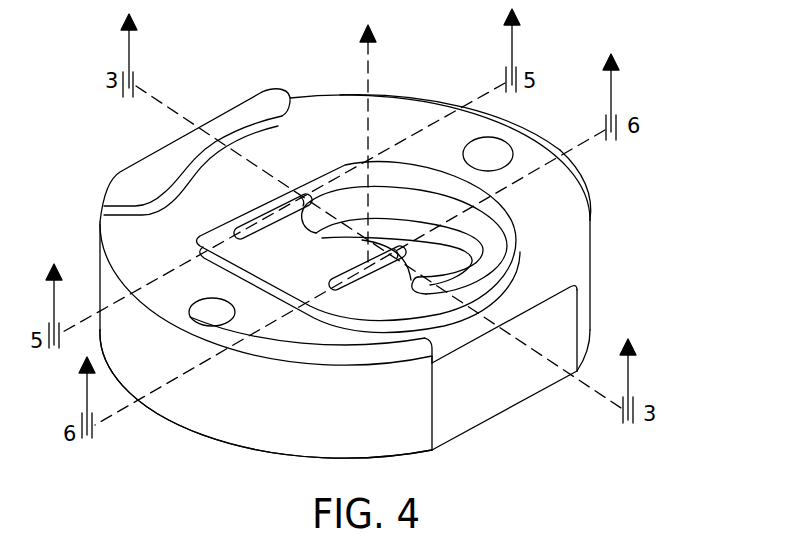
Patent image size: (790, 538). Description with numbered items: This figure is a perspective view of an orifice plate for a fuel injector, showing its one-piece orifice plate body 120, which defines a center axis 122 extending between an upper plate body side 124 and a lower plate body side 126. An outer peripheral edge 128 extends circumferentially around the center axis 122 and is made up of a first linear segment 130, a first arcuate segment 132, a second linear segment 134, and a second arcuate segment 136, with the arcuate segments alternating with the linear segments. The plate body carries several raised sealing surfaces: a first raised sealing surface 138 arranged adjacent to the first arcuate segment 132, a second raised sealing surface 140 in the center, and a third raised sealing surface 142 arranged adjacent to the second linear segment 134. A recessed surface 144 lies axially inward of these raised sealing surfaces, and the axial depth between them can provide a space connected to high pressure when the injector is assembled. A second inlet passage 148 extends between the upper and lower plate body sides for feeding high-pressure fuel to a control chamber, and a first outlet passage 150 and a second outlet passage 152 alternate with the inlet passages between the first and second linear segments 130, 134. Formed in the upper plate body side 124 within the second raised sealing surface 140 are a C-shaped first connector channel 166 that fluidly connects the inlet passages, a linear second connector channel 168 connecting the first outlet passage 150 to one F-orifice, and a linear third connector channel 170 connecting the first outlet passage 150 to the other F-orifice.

The orifice plate body 120 is at (590, 230).
The center axis 122 is at (370, 57).
The upper plate body side 124 is at (590, 165).
The lower plate body side 126 is at (478, 435).
The outer peripheral edge 128 is at (603, 289).
The first linear segment 130 is at (523, 378).
The first arcuate segment 132 is at (241, 430).
The second linear segment 134 is at (127, 168).
The second arcuate segment 136 is at (500, 120).
The first raised sealing surface 138 is at (242, 107).
The second raised sealing surface 140 is at (327, 167).
The third raised sealing surface 142 is at (337, 357).
The recessed surface 144 is at (581, 221).
The second inlet passage 148 is at (435, 285).
The first outlet passage 150 is at (290, 198).
The second outlet passage 152 is at (372, 262).
The first connector channel 166 is at (437, 190).
The second connector channel 168 is at (268, 222).
The third connector channel 170 is at (372, 277).